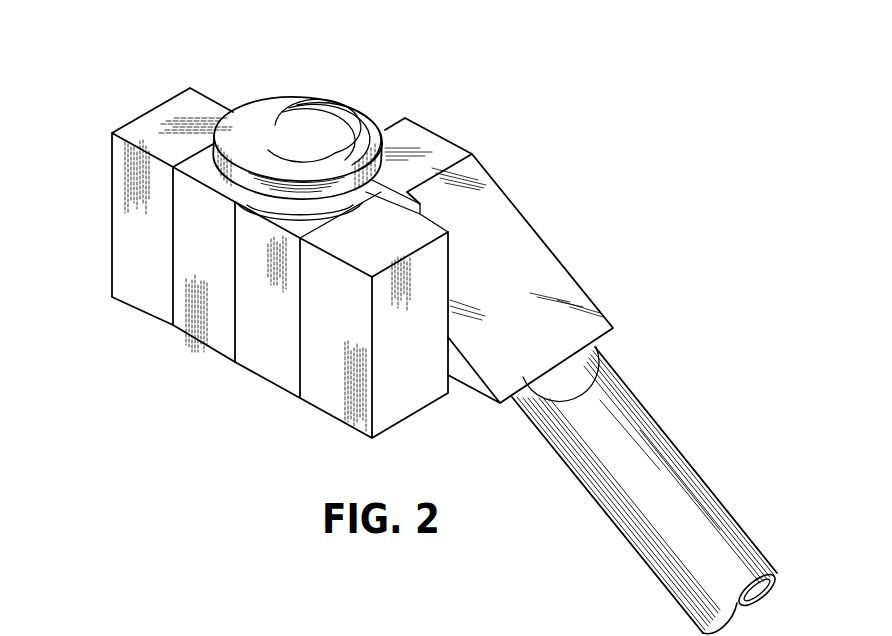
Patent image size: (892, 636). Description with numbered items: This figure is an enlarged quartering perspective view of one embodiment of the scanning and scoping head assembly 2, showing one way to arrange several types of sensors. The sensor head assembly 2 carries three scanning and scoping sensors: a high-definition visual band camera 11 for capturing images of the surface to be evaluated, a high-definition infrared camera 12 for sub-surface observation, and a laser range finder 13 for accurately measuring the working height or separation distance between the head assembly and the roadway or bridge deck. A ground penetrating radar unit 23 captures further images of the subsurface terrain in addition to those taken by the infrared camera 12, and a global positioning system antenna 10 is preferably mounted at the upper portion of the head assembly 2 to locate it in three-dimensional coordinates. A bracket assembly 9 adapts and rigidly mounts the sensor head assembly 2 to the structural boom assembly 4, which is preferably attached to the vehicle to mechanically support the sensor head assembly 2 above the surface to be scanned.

The scanning and scoping head assembly 2 is at (230, 68).
The boom assembly 4 is at (693, 463).
The bracket assembly 9 is at (540, 232).
The global positioning system (GPS) antenna 10 is at (300, 95).
The high-definition visual band camera 11 is at (205, 315).
The high-definition infrared camera 12 is at (268, 355).
The laser range finder 13 is at (330, 387).
The ground penetrating radar (GPR) unit 23 is at (122, 232).